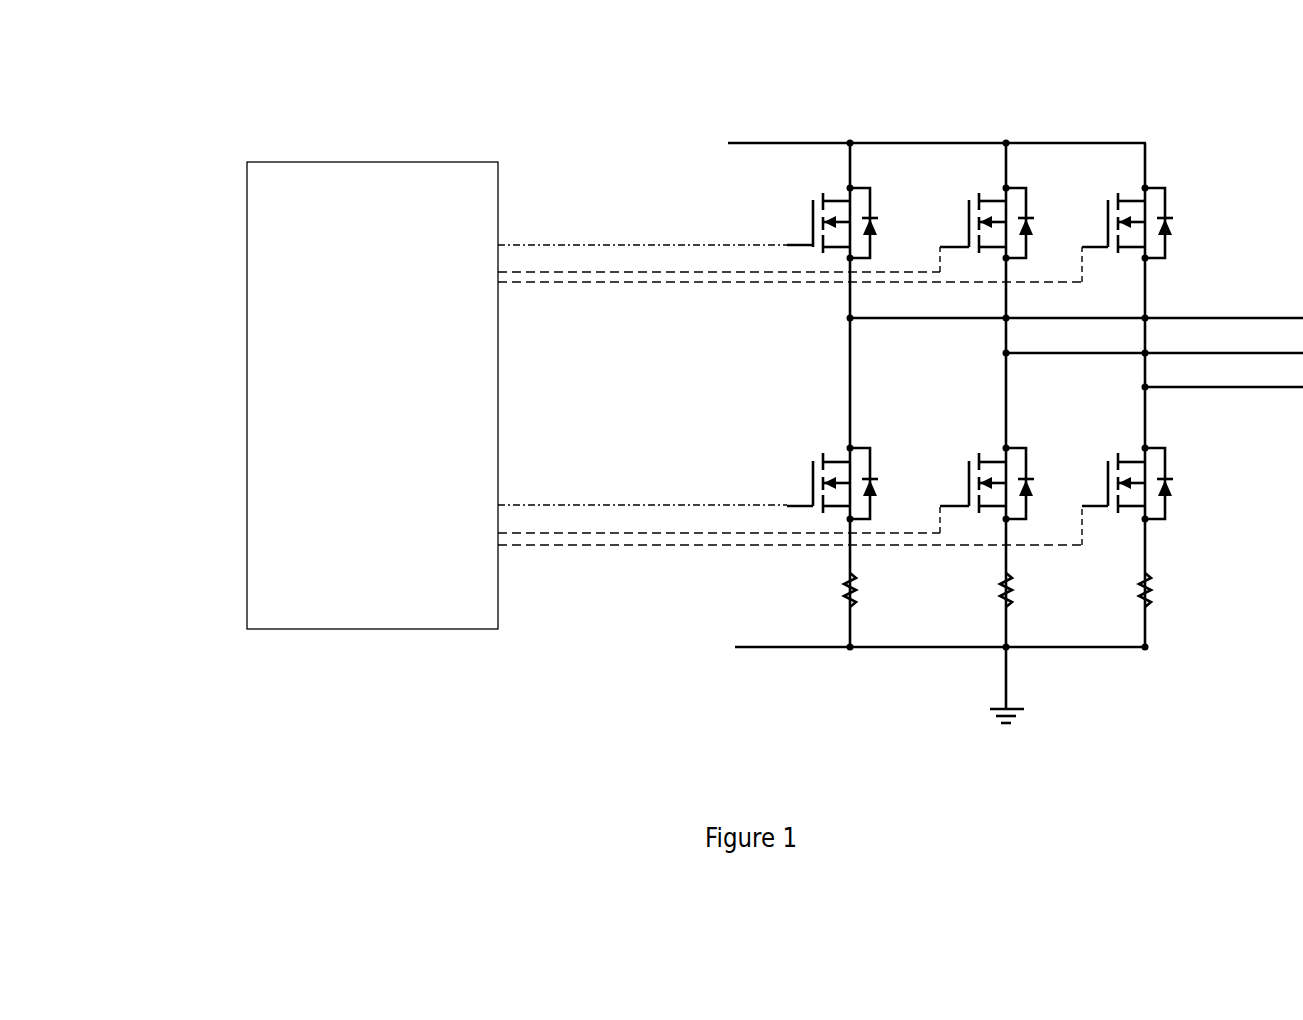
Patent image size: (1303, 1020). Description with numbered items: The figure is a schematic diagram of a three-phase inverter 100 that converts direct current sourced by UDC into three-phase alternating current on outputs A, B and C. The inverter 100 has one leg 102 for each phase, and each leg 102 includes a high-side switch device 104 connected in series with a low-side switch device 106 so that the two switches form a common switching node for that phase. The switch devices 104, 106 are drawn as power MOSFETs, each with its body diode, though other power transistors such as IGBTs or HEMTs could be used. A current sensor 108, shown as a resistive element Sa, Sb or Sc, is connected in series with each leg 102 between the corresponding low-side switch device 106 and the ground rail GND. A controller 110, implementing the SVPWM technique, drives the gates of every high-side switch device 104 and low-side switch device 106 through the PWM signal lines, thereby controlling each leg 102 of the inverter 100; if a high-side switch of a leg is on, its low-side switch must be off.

The 3-phase inverter 100 is at (108, 92).
The leg 102 is at (843, 114).
The high-side switch device 104 is at (794, 205).
The low-side switch device 106 is at (794, 466).
The current sensor 108 is at (820, 581).
The controller 110 is at (387, 417).